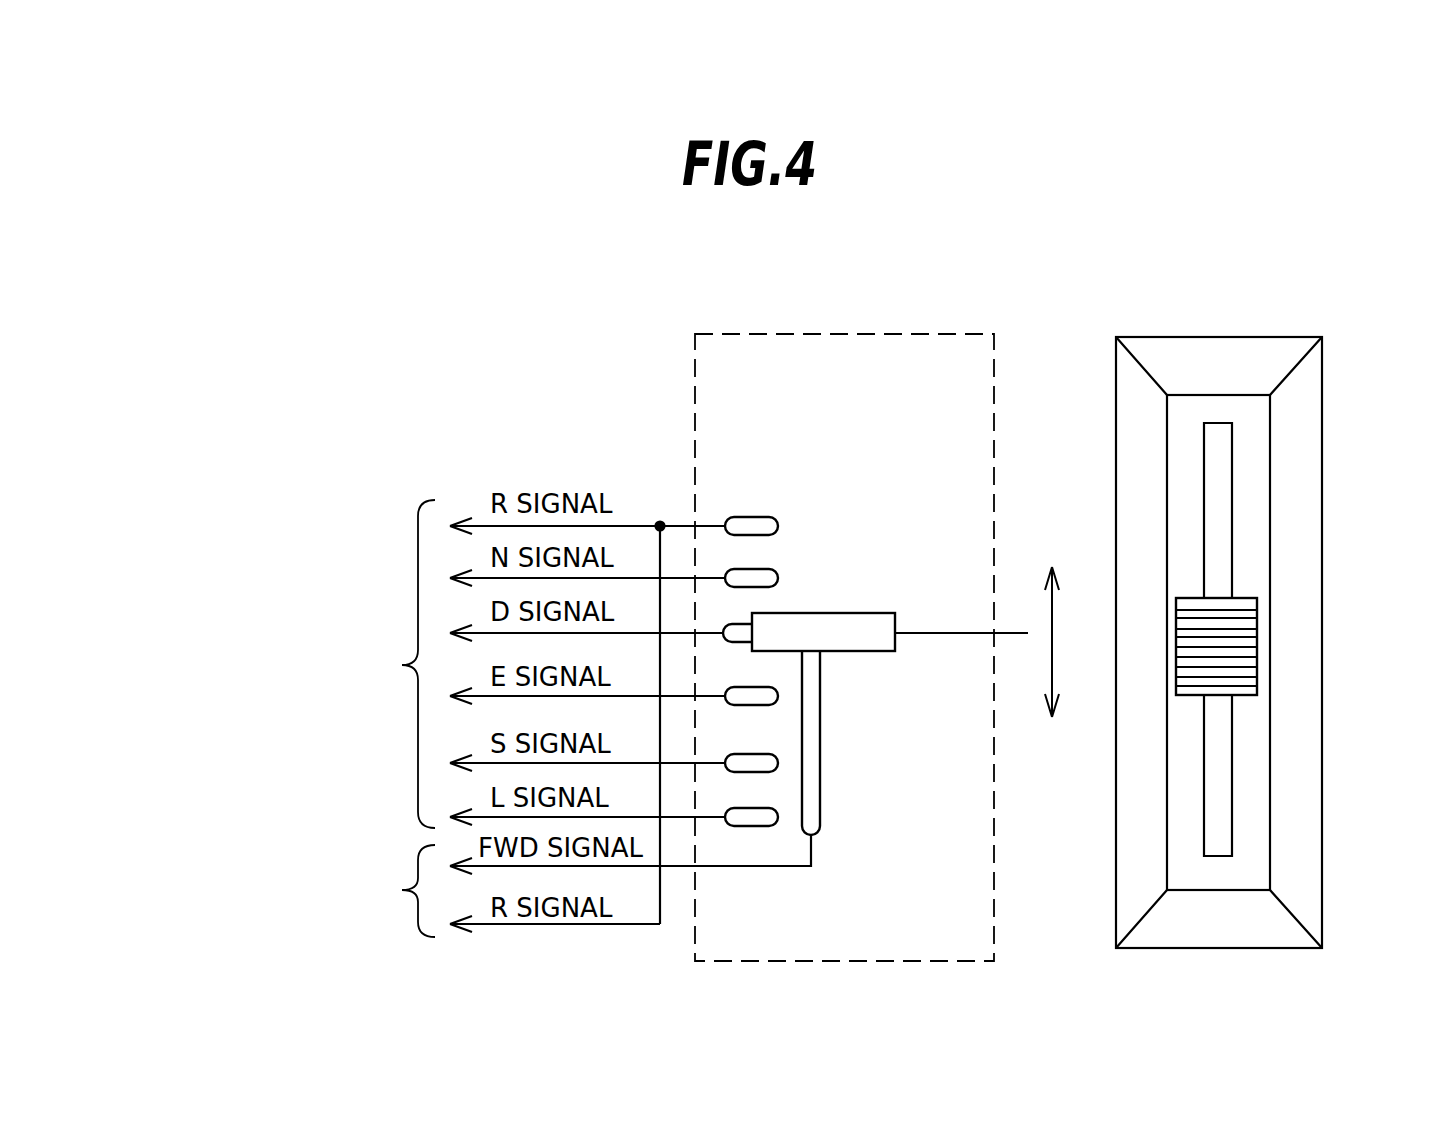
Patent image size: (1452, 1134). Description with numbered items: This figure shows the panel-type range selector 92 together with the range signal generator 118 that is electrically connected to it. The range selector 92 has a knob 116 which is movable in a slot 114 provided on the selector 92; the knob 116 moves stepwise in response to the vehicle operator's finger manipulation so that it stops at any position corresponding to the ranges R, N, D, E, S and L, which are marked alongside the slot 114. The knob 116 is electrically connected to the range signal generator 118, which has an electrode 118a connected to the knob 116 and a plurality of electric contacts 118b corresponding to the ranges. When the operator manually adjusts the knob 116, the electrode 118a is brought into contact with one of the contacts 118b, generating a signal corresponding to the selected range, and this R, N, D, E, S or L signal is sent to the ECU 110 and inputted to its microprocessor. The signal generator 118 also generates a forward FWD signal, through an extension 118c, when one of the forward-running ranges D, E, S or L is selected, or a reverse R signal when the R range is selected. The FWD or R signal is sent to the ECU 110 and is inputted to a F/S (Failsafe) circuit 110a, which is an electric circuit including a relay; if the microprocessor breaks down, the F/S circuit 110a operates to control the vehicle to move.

The range selector 92 is at (1230, 337).
The ECU 110 is at (278, 664).
The F/S (Failsafe) circuit 110a is at (278, 891).
The slot 114 is at (1218, 455).
The knob 116 is at (1257, 646).
The range signal generator 118 is at (818, 334).
The electrode 118a is at (890, 651).
The electric contacts 118b is at (778, 578).
The extension 118c is at (820, 798).